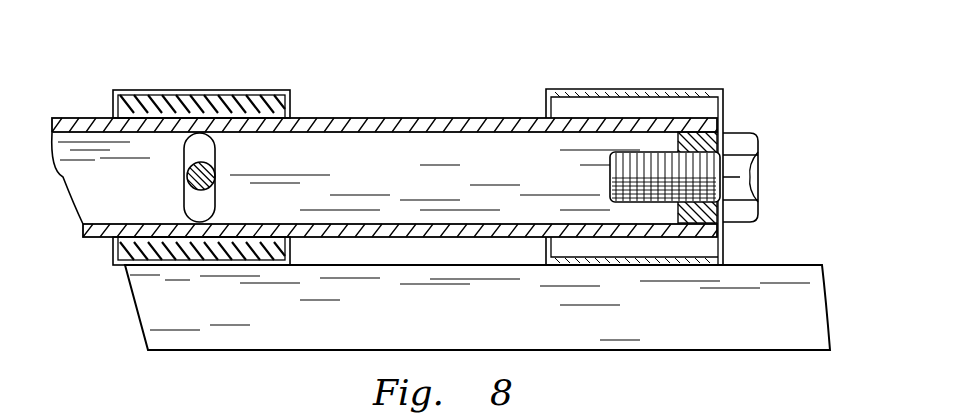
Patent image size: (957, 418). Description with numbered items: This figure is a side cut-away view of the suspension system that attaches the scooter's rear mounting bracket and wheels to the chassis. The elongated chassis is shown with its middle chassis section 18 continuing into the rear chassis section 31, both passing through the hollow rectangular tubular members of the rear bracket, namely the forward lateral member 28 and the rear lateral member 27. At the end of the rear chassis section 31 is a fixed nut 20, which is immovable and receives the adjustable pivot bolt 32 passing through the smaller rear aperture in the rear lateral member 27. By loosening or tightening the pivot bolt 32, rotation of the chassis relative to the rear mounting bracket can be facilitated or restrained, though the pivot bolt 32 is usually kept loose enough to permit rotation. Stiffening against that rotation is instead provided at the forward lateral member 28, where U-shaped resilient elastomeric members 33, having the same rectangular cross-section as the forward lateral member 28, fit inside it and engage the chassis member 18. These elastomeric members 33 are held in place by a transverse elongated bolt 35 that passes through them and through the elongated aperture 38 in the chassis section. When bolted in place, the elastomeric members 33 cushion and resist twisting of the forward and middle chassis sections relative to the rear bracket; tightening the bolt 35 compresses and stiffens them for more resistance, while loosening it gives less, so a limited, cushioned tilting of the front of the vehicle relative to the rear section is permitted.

The middle chassis section 18 is at (88, 148).
The fixed nut 20 is at (687, 142).
The rear lateral member 27 is at (577, 91).
The forward lateral member 28 is at (290, 103).
The rear chassis section 31 is at (517, 117).
The adjustable pivot bolt 32 is at (758, 178).
The resilient elastomeric member 33 is at (221, 102).
The transverse elongated bolt 35 is at (215, 178).
The elongated aperture 38 is at (193, 206).